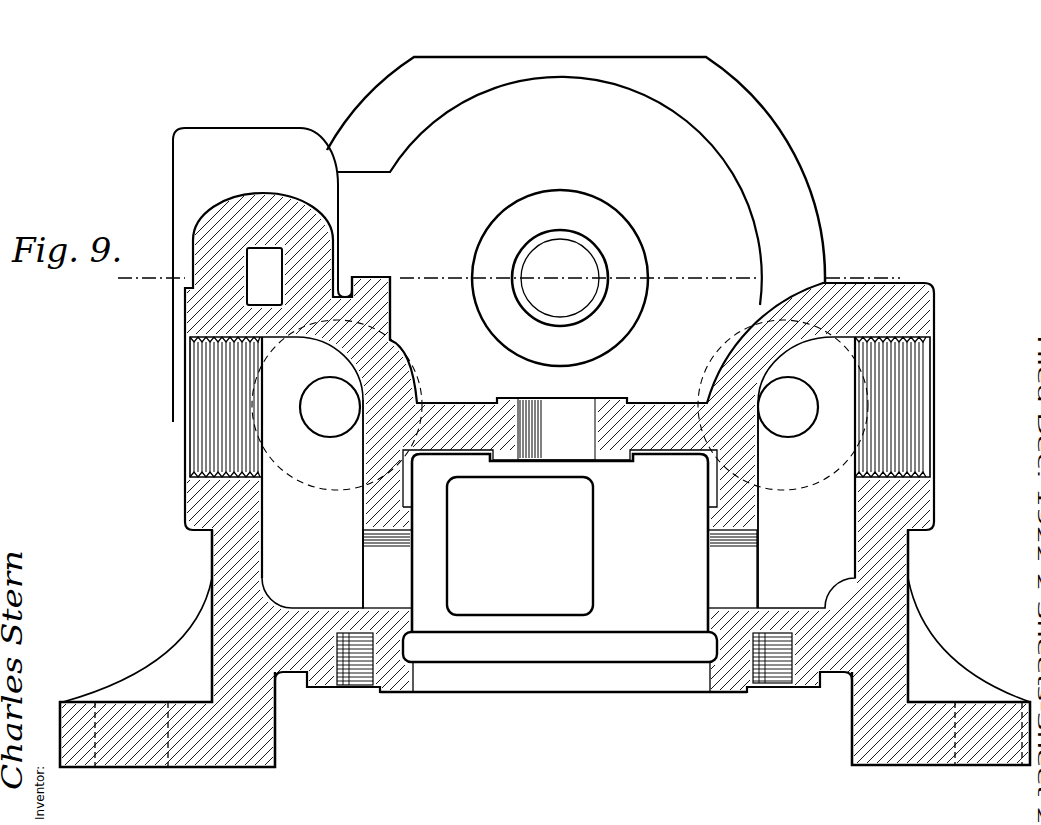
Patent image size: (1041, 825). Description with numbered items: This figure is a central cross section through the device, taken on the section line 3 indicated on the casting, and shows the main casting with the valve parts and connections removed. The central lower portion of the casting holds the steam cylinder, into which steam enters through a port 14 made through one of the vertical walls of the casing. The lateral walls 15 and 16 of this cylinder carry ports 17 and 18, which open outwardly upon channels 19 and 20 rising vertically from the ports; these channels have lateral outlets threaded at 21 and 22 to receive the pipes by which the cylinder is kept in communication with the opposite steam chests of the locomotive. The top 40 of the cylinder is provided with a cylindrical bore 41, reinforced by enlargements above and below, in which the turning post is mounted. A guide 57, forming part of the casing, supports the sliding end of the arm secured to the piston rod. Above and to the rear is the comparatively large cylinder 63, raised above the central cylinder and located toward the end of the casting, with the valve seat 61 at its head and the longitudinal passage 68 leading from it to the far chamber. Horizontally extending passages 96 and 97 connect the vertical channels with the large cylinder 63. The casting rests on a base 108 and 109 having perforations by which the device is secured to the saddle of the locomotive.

The section line 3- 3 is at (514, 273).
The port 14 is at (593, 549).
The lateral wall 15 is at (370, 497).
The lateral wall 16 is at (744, 462).
The port 17 is at (398, 581).
The port 18 is at (715, 577).
The channel 19 is at (301, 472).
The channel 20 is at (819, 472).
The threaded lateral outlet 21 is at (198, 437).
The threaded lateral outlet 22 is at (917, 421).
The cylinder top 40 is at (641, 420).
The cylindrical bore 41 is at (547, 402).
The guide 57 is at (372, 274).
The valve seat 61 is at (517, 292).
The large cylinder 63 is at (733, 177).
The passage 68 is at (264, 276).
The horizontal passage 96 is at (319, 425).
The horizontal passage 97 is at (805, 402).
The base 108 is at (988, 765).
The base 109 is at (147, 768).